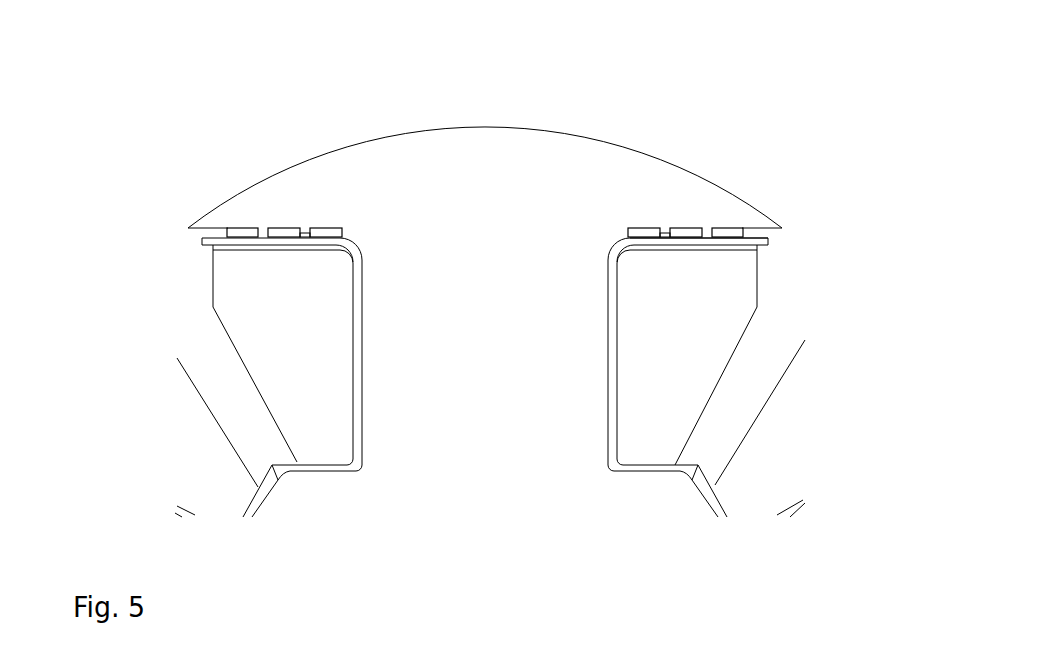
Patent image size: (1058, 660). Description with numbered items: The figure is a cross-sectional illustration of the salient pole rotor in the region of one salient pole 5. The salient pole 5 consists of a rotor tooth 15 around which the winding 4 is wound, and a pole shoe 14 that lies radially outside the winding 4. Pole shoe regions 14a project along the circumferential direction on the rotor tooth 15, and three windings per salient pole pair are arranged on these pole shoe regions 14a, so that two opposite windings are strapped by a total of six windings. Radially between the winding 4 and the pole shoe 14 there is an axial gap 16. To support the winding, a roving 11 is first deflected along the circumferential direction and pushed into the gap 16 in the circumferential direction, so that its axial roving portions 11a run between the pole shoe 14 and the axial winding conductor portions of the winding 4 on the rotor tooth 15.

The winding 4 is at (658, 375).
The salient pole 5 is at (563, 132).
The roving 11 is at (637, 225).
The axial roving portion 11a is at (733, 233).
The pole shoe 14 is at (437, 167).
The pole shoe region 14a is at (248, 205).
The rotor tooth 15 is at (400, 338).
The axial gap 16 is at (758, 233).